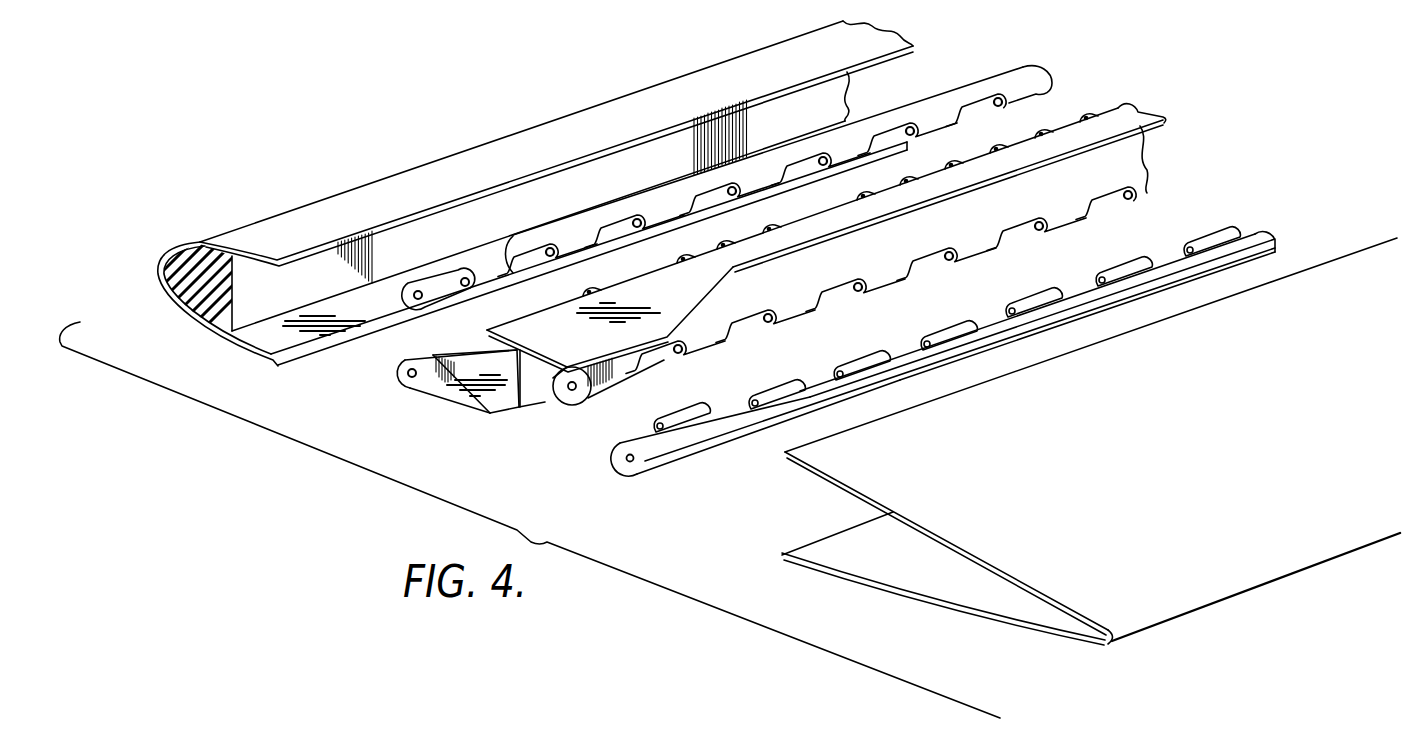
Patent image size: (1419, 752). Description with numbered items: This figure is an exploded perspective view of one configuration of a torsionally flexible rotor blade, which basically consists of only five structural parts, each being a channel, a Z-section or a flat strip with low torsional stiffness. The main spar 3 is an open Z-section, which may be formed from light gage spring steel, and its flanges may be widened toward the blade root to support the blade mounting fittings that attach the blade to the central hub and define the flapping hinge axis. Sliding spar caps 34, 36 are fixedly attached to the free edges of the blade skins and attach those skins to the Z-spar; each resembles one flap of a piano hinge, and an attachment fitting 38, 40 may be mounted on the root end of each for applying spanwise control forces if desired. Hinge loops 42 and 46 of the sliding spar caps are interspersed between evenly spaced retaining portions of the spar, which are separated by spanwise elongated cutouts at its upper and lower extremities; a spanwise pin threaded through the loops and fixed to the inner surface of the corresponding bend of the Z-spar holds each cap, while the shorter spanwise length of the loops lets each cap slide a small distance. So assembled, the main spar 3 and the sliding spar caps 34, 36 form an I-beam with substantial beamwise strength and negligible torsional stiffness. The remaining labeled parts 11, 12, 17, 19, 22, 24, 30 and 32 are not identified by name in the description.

The main spar 3 is at (1133, 166).
The leading edge slat 11 is at (325, 210).
The wing 12 is at (1165, 612).
The link 17 is at (397, 374).
The roller 19 is at (577, 397).
The hinge plate 22 is at (920, 190).
The bracket 24 is at (477, 410).
The hinge strip end 30 is at (1102, 128).
The hinge knuckles 32 is at (1112, 204).
The sliding spar cap 34 is at (487, 262).
The sliding spar cap 36 is at (757, 420).
The attachment fitting 38 is at (407, 300).
The attachment fitting 40 is at (622, 444).
The hinge loop 42 is at (957, 118).
The hinge loop 46 is at (771, 392).